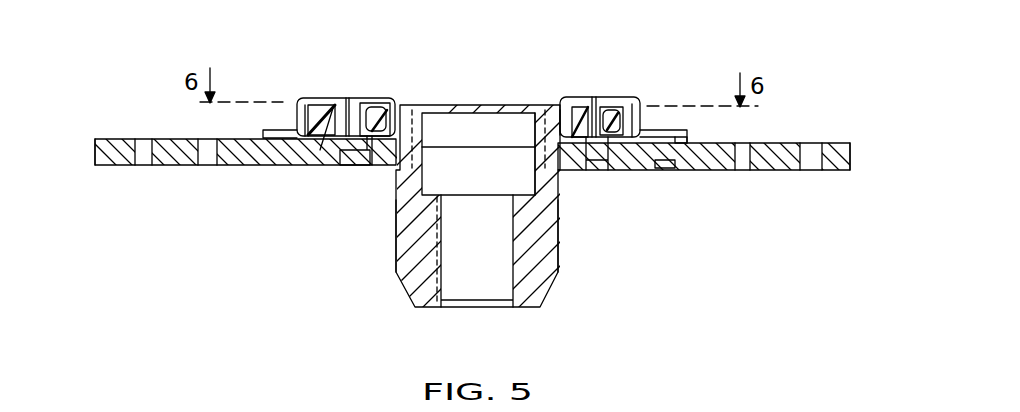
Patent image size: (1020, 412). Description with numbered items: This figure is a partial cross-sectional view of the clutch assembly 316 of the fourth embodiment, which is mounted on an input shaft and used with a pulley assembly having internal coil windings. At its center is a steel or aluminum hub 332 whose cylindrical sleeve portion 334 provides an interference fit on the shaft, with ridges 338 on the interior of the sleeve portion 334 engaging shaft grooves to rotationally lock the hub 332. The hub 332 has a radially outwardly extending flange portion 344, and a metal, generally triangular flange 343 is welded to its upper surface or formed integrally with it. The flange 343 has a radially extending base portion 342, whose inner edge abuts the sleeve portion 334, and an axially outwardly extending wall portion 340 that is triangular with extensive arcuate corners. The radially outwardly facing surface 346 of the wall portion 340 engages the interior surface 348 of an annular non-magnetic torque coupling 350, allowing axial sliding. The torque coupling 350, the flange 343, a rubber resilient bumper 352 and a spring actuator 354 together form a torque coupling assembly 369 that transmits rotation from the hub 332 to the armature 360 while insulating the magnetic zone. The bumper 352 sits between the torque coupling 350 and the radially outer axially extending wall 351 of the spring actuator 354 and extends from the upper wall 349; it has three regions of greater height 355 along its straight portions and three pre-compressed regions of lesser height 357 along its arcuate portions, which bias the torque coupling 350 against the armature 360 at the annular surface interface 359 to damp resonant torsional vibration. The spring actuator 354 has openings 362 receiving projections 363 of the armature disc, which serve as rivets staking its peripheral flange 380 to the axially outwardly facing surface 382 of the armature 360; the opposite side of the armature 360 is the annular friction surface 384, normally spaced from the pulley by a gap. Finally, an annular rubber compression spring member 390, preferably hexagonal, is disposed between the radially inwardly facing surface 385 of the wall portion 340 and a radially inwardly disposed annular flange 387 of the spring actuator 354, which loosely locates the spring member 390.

The clutch assembly 316 is at (78, 70).
The hub 332 is at (566, 258).
The sleeve portion 334 is at (397, 255).
The ridges 338 is at (509, 262).
The wall portion 340 is at (335, 168).
The base portion 342 is at (375, 168).
The flange 343 is at (545, 110).
The flange portion 344 is at (572, 162).
The radially outwardly facing surface 346 is at (603, 110).
The interior surface 348 is at (597, 110).
The upper wall 349 is at (328, 95).
The torque coupling 350 is at (318, 142).
The radially outer axially extending wall 351 is at (642, 113).
The resilient bumper 352 is at (657, 167).
The spring actuator 354 is at (640, 100).
The regions of greater height 355 is at (625, 110).
The regions of lesser height 357 is at (303, 100).
The annular surface interface 359 is at (330, 150).
The armature 360 is at (784, 148).
The openings 362 is at (690, 138).
The projections 363 is at (698, 167).
The torque coupling assembly 369 is at (562, 80).
The peripheral flange 380 is at (280, 130).
The axially outwardly facing surface 382 is at (178, 150).
The friction surface 384 is at (187, 168).
The radially inwardly facing surface 385 is at (360, 103).
The annular flange 387 is at (393, 100).
The compression spring member 390 is at (428, 104).